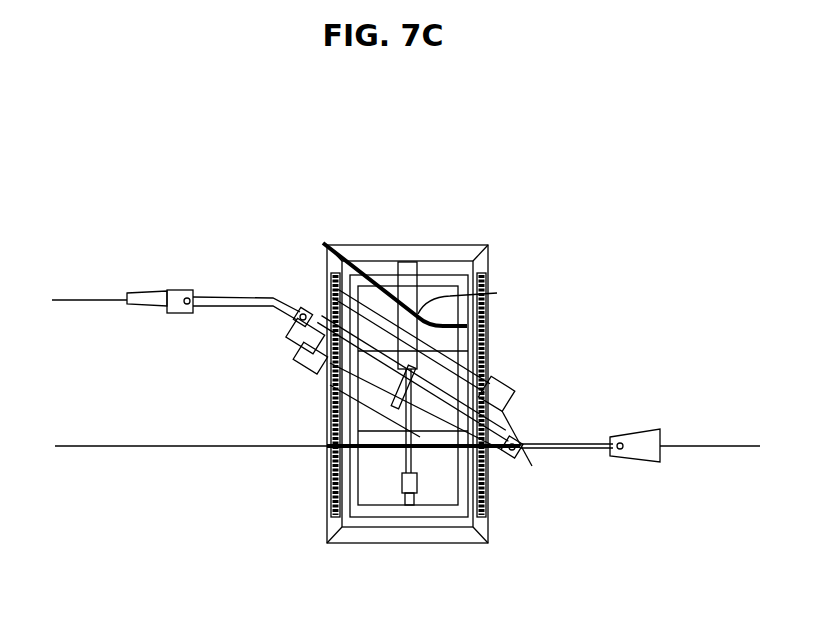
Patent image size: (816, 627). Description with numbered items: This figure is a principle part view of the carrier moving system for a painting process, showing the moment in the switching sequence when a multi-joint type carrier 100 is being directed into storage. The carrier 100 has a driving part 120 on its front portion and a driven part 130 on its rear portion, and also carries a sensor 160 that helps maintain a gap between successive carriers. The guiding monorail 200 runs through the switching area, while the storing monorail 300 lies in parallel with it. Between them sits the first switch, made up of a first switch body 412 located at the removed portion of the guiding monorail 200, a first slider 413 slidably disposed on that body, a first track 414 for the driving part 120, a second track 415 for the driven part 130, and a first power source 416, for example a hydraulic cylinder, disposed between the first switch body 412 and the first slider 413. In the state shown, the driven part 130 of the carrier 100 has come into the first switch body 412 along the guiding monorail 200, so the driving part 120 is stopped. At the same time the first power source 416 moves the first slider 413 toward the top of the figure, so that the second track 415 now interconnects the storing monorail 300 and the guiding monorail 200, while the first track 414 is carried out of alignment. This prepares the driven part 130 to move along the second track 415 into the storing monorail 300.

The multi-joint type carrier 100 is at (448, 377).
The driving part 120 is at (302, 312).
The driven part 130 is at (520, 455).
The sensor 160 is at (178, 290).
The guiding monorail 200 is at (397, 344).
The storing monorail 300 is at (287, 487).
The first switch body 412 is at (450, 246).
The first slider 413 is at (348, 278).
The first track 414 is at (372, 280).
The second track 415 is at (380, 450).
The first power source 416 is at (497, 293).